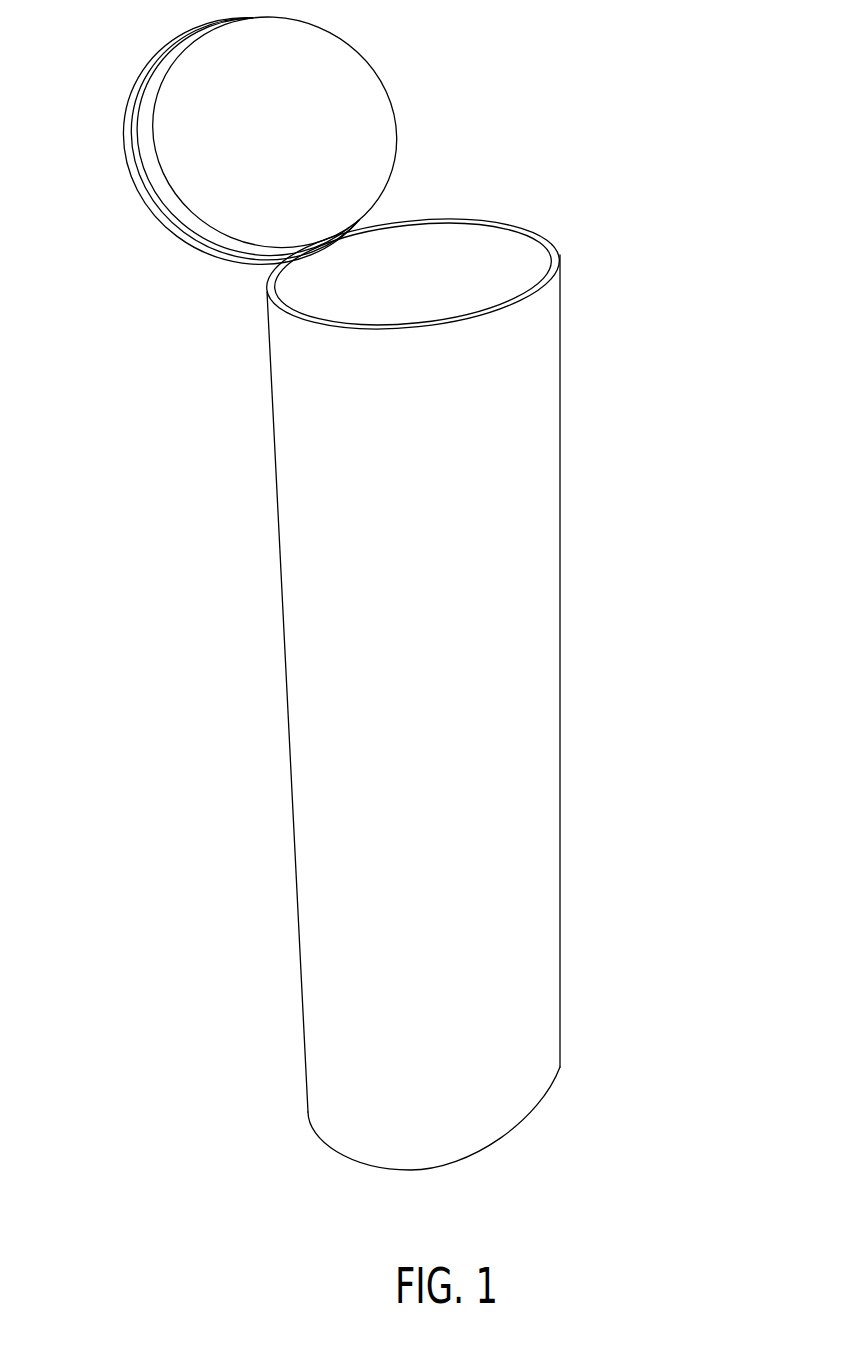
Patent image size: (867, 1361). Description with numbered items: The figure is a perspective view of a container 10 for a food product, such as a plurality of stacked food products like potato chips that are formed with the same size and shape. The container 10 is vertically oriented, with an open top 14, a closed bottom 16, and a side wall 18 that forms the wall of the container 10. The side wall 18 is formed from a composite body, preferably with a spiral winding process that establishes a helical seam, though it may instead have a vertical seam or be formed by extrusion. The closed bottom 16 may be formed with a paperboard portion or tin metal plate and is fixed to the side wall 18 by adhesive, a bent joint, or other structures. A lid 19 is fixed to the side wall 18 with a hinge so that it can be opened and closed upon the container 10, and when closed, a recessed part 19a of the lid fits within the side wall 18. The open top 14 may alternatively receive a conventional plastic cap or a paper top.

The container 10 is at (648, 102).
The open top 14 is at (448, 275).
The closed bottom 16 is at (458, 1162).
The side wall 18 is at (530, 739).
The lid 19 is at (197, 152).
The recessed part 19a is at (347, 102).